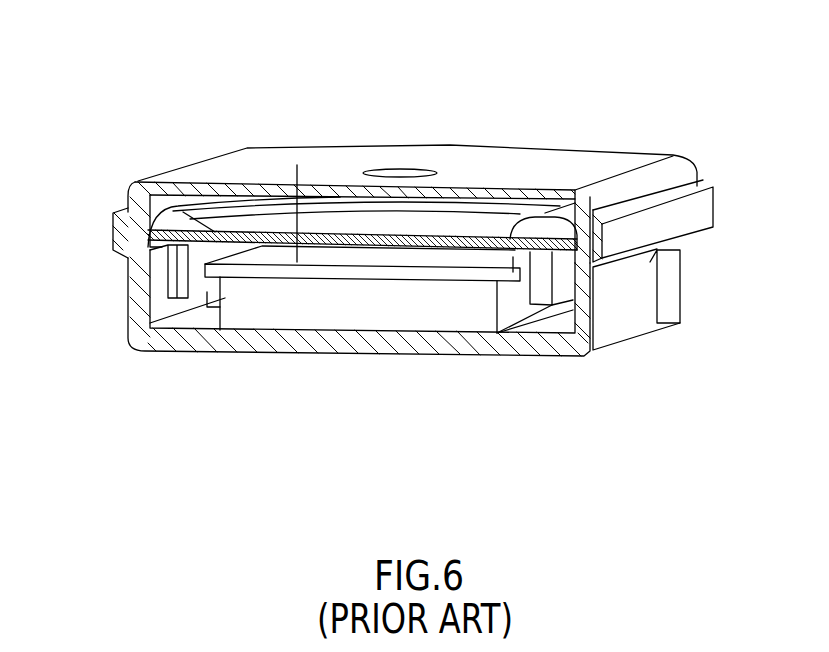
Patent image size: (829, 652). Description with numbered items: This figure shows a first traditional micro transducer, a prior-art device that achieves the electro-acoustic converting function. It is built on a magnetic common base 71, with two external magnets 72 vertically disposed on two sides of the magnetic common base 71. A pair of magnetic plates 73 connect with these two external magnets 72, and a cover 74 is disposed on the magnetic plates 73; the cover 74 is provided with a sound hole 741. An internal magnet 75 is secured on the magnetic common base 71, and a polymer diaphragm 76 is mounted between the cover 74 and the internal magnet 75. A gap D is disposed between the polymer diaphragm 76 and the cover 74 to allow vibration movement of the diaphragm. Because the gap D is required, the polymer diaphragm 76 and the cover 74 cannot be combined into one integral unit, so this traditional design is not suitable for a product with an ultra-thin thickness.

The magnetic common base 71 is at (258, 342).
The external magnets 72 is at (150, 273).
The magnetic plates 73 is at (113, 228).
The cover 74 is at (573, 158).
The sound hole 741 is at (393, 169).
The internal magnet 75 is at (355, 272).
The polymer diaphragm 76 is at (447, 226).
The gap D is at (313, 205).